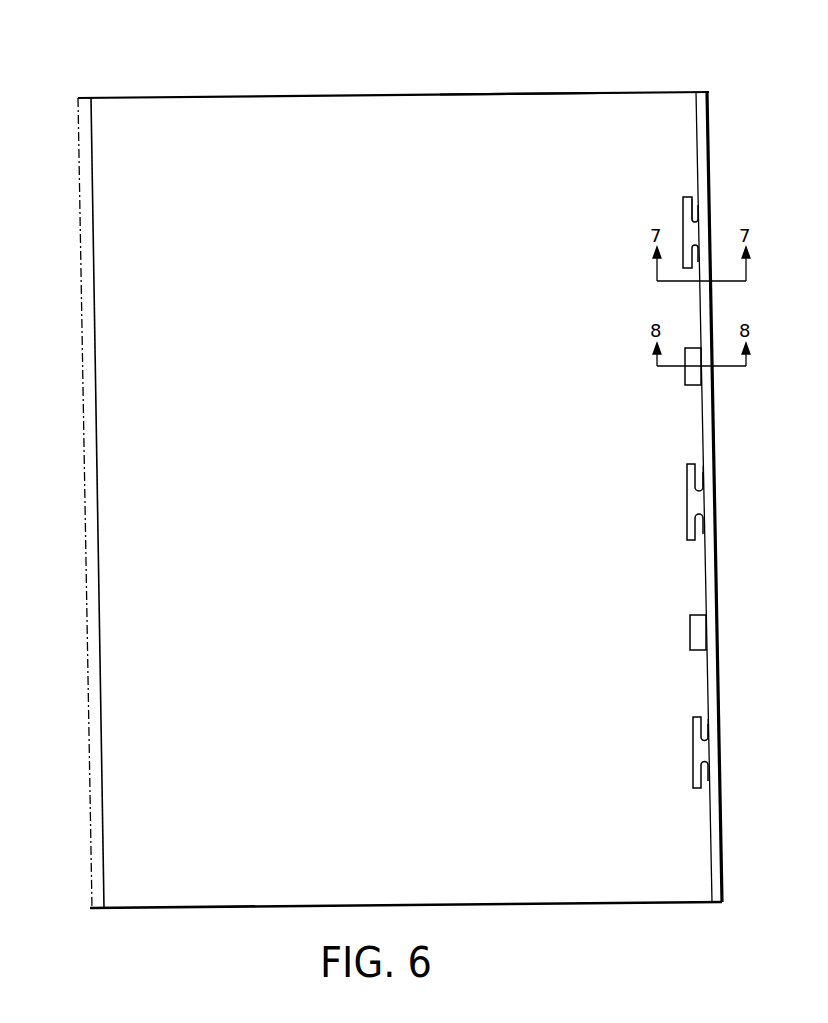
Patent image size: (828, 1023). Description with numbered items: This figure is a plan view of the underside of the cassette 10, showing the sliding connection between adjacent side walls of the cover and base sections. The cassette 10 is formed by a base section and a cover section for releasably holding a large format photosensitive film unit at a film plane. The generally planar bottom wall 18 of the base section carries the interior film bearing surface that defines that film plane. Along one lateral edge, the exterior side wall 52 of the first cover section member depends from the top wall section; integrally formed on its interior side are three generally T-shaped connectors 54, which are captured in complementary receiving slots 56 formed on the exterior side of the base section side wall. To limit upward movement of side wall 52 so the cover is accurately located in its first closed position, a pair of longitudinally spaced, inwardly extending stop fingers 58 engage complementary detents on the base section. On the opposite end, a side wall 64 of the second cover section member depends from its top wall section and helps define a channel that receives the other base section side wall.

The cassette 10 is at (300, 93).
The bottom wall 18 is at (518, 86).
The exterior side wall 52 is at (710, 155).
The T-shaped connectors 54 is at (688, 213).
The receiving slots 56 is at (690, 193).
The stop fingers 58 is at (690, 378).
The side wall 64 is at (80, 212).